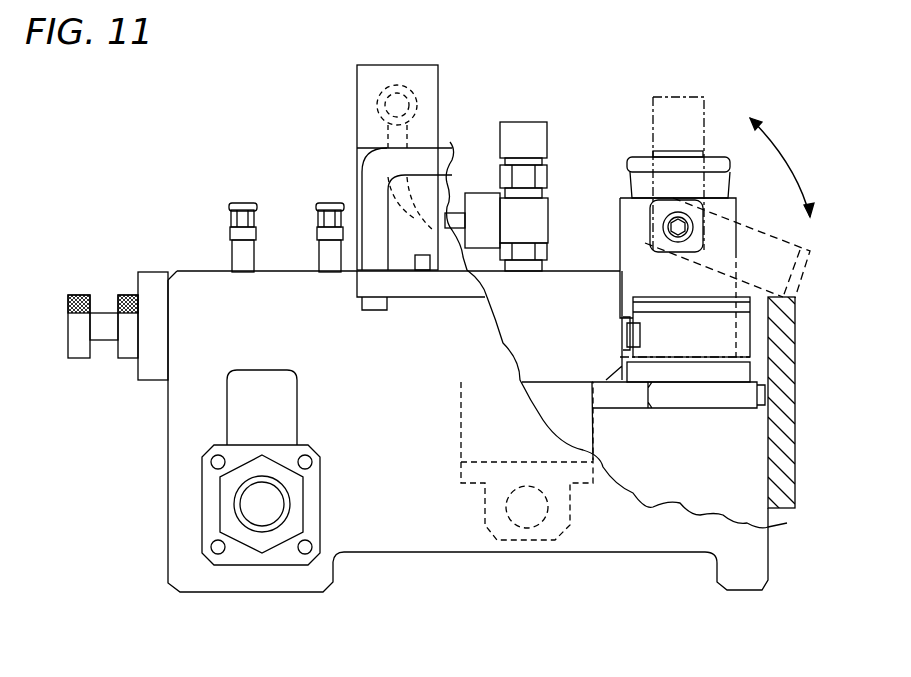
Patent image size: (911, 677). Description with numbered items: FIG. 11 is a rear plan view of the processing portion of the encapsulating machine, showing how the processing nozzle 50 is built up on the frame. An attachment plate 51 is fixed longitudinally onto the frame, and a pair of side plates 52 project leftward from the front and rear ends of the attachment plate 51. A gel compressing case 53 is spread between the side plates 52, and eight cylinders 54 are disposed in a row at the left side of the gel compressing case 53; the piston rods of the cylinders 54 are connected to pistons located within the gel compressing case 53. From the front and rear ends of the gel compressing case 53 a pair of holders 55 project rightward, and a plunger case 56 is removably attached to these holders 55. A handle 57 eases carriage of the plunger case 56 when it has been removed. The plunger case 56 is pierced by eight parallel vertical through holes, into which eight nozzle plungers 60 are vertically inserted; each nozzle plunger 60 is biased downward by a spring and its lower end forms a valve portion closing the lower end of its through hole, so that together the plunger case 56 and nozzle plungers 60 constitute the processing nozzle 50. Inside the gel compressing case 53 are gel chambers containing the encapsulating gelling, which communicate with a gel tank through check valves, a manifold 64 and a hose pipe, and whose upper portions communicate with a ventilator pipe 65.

The processing nozzle 50 is at (741, 100).
The attachment plate 51 is at (797, 498).
The side plates 52 is at (180, 420).
The gel compressing case 53 is at (572, 295).
The cylinders 54 is at (157, 290).
The holders 55 is at (665, 328).
The plunger case 56 is at (632, 208).
The handle 57 is at (768, 242).
The nozzle plungers 60 is at (677, 150).
The manifold 64 is at (482, 505).
The ventilator pipe 65 is at (413, 93).